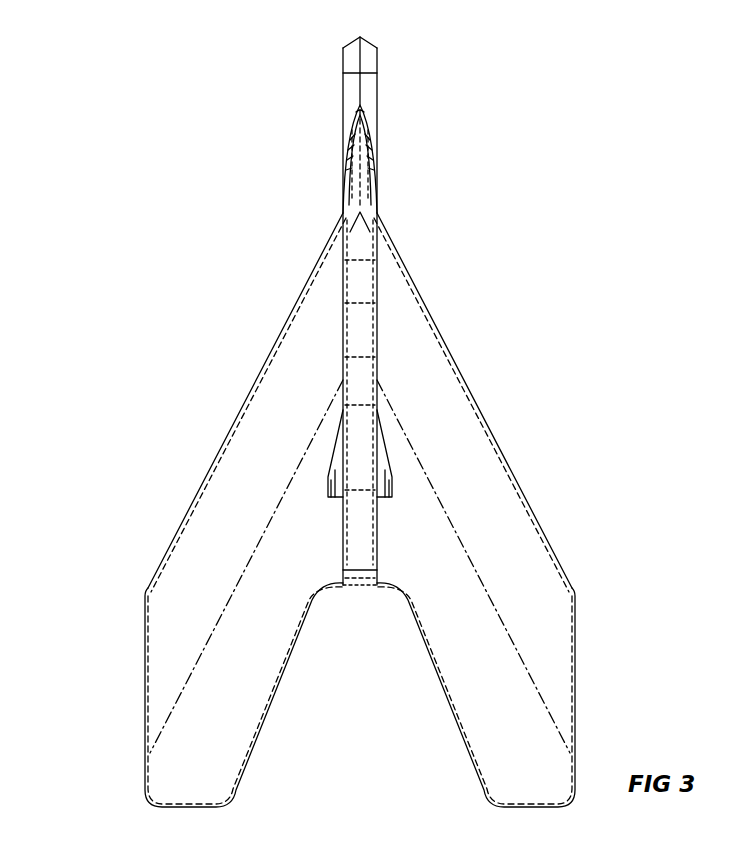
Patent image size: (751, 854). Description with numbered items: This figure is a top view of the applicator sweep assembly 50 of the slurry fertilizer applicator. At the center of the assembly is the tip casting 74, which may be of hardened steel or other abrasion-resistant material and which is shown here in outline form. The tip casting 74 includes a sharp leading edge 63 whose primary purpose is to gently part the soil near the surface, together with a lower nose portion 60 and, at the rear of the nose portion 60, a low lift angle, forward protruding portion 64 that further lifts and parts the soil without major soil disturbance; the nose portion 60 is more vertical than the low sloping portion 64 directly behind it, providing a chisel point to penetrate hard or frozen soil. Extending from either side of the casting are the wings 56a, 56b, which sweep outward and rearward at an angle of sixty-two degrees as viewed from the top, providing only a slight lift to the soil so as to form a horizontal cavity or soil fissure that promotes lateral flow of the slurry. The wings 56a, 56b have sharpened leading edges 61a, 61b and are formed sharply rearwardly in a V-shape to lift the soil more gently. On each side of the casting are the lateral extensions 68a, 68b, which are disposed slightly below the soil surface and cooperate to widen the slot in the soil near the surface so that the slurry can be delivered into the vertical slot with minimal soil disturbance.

The applicator sweep assembly 50 is at (370, 509).
The wing 56a is at (143, 708).
The wing 56b is at (575, 717).
The lower nose portion 60 is at (343, 73).
The sharpened leading edge 61a is at (178, 522).
The sharpened leading edge 61b is at (536, 515).
The sharp leading edge 63 is at (365, 193).
The forward protruding portion 64 is at (358, 83).
The lateral extension 68a is at (330, 477).
The lateral extension 68b is at (389, 474).
The tip casting 74 is at (389, 108).